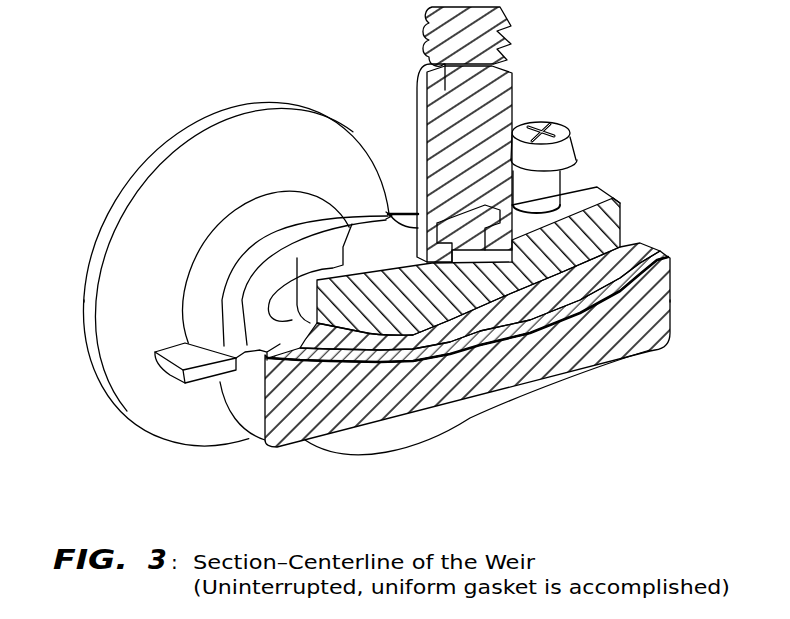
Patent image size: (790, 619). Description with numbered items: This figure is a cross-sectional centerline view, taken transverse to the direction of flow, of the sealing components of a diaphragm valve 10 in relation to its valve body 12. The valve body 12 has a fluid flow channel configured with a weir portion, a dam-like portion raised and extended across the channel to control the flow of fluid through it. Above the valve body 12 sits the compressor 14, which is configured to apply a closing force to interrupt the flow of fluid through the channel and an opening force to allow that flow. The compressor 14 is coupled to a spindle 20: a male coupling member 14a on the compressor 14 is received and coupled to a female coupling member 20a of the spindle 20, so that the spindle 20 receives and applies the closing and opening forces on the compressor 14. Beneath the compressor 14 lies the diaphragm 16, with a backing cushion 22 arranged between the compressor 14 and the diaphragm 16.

The diaphragm valve 10 is at (262, 62).
The valve body 12 is at (300, 418).
The compressor 14 is at (605, 193).
The male coupling member 14a is at (430, 222).
The diaphragm 16 is at (185, 362).
The spindle 20 is at (473, 27).
The female coupling member 20a is at (388, 214).
The backing cushion 22 is at (643, 248).